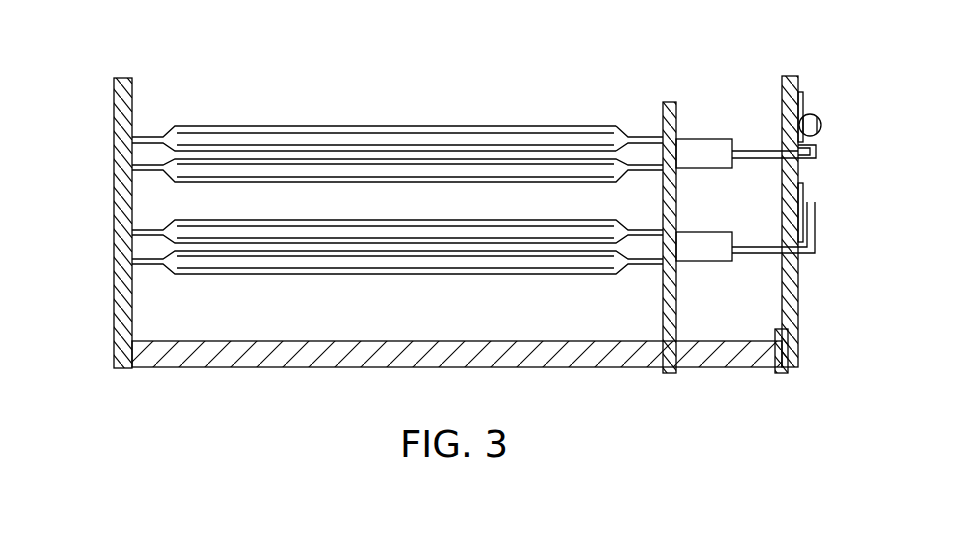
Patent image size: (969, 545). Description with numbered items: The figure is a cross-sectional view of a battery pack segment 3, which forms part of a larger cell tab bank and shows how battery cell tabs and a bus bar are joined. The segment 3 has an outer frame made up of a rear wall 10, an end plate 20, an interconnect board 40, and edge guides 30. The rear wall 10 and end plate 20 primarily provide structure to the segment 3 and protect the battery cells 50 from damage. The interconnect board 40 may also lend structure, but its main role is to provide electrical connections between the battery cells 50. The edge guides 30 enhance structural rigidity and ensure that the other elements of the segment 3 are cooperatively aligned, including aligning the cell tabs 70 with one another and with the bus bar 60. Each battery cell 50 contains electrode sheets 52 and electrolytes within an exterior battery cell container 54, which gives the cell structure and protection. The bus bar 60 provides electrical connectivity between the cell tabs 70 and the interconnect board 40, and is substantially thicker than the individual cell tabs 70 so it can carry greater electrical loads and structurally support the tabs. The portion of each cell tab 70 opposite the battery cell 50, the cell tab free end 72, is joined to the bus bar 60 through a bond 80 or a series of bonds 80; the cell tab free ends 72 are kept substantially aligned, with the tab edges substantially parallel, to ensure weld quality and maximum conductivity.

The battery pack segment 3 is at (123, 404).
The rear wall 10 is at (114, 127).
The end plate 20 is at (313, 368).
The edge guides 30 is at (668, 374).
The interconnect board 40 is at (785, 76).
The battery cells 50 is at (397, 148).
The electrode sheets 52 is at (397, 113).
The exterior battery cell container 54 is at (618, 126).
The bus bar 60 is at (803, 100).
The cell tabs 70 is at (762, 262).
The cell tab free end 72 is at (818, 215).
The bond 80 is at (821, 125).